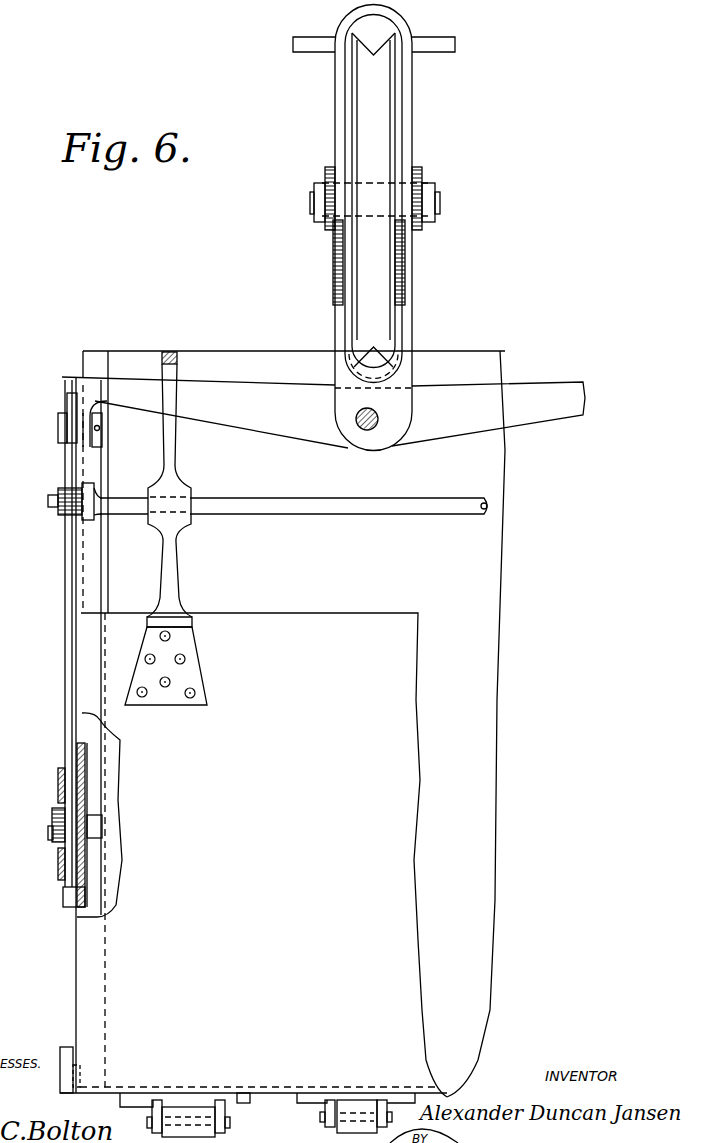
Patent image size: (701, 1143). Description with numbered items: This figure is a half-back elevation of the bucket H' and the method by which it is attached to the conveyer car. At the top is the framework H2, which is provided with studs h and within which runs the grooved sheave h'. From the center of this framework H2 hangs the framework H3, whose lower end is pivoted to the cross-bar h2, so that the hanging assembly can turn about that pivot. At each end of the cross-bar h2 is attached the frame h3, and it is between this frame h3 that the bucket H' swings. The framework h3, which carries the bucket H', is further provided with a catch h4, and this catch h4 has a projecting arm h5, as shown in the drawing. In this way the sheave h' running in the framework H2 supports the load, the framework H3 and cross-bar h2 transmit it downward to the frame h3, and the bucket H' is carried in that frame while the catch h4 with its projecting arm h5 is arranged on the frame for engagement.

The studs h is at (374, 62).
The grooved sheave h' is at (350, 200).
The framework H2 is at (403, 140).
The framework H3 is at (410, 320).
The cross-bar h2 is at (263, 426).
The frame h3 is at (64, 635).
The catch h4 is at (184, 578).
The projecting arm h5 is at (180, 360).
The bucket H' is at (265, 744).